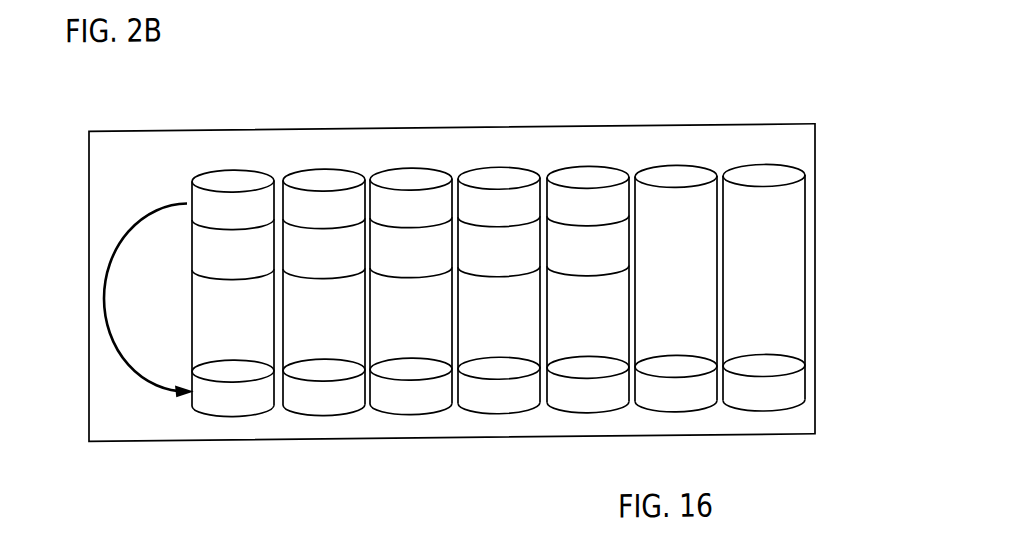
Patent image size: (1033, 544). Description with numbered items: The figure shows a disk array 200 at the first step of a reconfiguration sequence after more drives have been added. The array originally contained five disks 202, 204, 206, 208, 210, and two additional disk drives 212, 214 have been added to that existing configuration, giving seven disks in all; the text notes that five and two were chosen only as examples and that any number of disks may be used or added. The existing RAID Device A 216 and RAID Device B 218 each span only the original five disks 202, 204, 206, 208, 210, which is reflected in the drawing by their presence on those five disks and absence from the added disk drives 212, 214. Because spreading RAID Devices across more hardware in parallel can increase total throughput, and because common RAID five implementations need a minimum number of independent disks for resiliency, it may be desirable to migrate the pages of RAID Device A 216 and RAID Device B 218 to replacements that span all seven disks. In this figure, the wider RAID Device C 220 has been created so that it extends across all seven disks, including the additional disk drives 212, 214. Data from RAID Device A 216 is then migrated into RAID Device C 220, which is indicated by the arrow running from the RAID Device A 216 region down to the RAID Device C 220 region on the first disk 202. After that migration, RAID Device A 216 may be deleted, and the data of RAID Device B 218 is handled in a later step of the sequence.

The disk array 200 is at (824, 204).
The disk 202 is at (262, 175).
The disk 204 is at (350, 176).
The disk 206 is at (438, 177).
The disk 208 is at (524, 178).
The disk 210 is at (617, 176).
The additional disk drive 212 is at (705, 176).
The additional disk drive 214 is at (792, 176).
The RAID Device A 216 is at (192, 189).
The RAID Device B 218 is at (192, 253).
The RAID Device C 220 is at (198, 415).